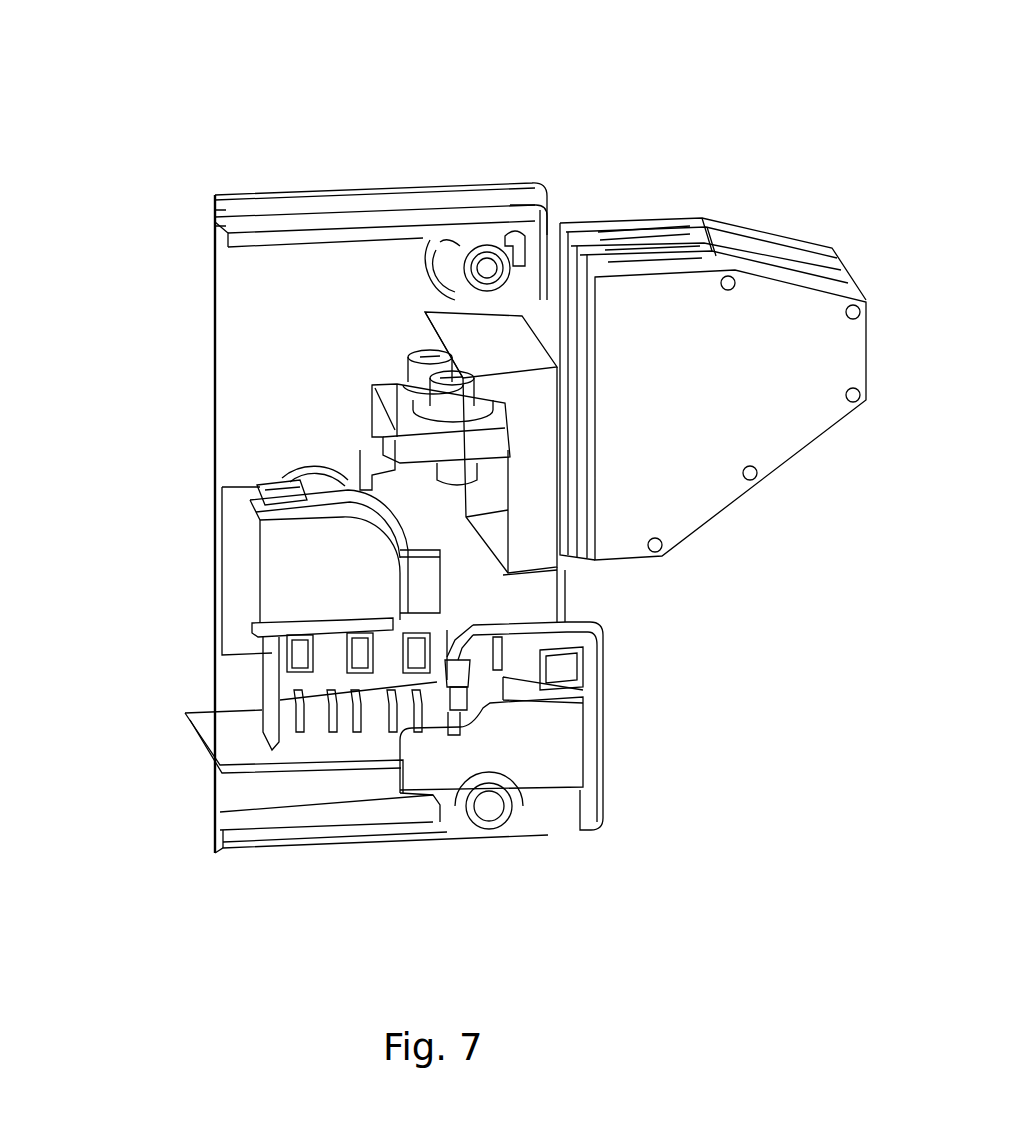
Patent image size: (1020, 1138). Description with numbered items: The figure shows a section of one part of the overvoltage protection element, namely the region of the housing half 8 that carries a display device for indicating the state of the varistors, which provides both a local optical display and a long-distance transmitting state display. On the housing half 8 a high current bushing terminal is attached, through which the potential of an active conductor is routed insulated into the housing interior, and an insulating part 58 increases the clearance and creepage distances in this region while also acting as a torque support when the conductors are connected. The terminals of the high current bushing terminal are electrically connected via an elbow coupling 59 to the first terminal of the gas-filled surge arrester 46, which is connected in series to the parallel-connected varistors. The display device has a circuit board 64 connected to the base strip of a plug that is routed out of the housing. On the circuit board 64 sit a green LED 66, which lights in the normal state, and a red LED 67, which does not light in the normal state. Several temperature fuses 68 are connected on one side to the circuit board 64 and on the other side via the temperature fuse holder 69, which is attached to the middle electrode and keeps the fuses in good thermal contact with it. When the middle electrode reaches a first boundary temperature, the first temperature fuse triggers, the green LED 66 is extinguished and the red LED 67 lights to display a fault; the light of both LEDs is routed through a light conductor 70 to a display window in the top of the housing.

The housing half 8 is at (262, 178).
The insulating part 58 is at (513, 340).
The elbow coupling 59 is at (375, 428).
The gas-filled surge arrester 46 is at (310, 476).
The temperature fuse holder 69 is at (292, 562).
The circuit board 64 is at (225, 738).
The light conductor 70 is at (540, 617).
The green LED 66 is at (483, 725).
The red LED 67 is at (447, 740).
The temperature fuses 68 is at (398, 725).